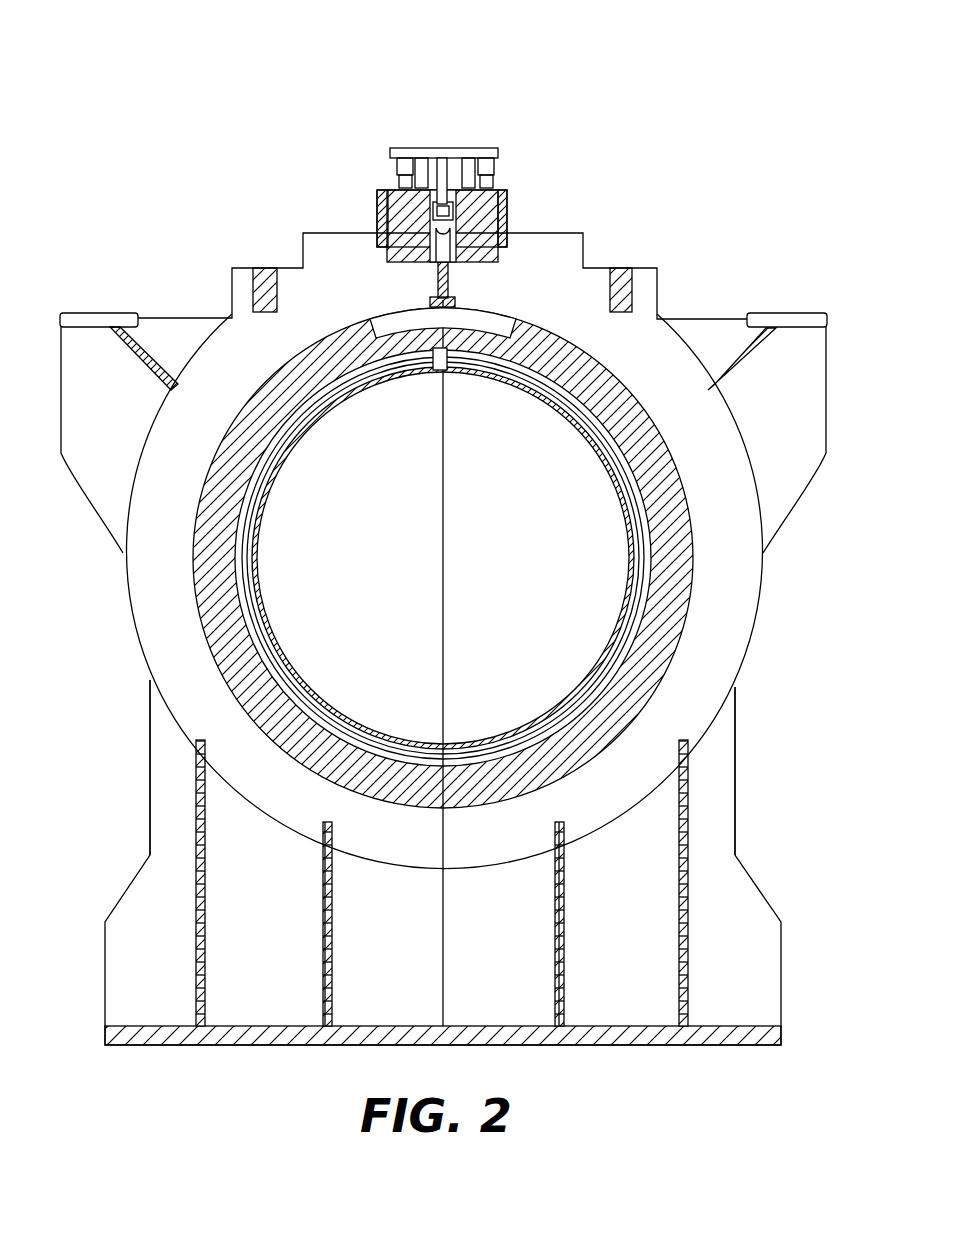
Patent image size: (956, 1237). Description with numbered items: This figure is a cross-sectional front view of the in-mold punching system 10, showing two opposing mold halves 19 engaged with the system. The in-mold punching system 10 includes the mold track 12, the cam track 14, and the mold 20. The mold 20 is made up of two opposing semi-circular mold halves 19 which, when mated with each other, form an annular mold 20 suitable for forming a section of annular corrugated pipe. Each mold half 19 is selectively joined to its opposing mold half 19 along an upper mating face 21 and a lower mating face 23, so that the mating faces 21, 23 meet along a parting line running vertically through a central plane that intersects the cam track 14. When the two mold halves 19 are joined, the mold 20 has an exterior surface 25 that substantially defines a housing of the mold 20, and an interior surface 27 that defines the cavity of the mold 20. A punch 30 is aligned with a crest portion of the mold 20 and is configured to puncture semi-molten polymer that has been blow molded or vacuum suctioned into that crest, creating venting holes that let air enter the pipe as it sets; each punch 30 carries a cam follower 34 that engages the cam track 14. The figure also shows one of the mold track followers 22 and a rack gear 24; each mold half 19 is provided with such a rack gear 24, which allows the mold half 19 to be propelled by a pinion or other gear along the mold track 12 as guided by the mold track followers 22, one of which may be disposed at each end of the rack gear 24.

The in-mold punching system 10 is at (264, 106).
The mold 20 is at (180, 214).
The mold track 12 is at (490, 149).
The cam follower 34 is at (392, 218).
The mold track follower 22 is at (443, 148).
The cam track 14 is at (468, 200).
The rack gear 24 is at (378, 212).
The punch 30 is at (448, 290).
The upper mating face 21 is at (439, 350).
The interior surface 27 is at (258, 556).
The lower mating face 23 is at (440, 786).
The exterior surface 25 is at (126, 603).
The mold half 19 is at (145, 650).